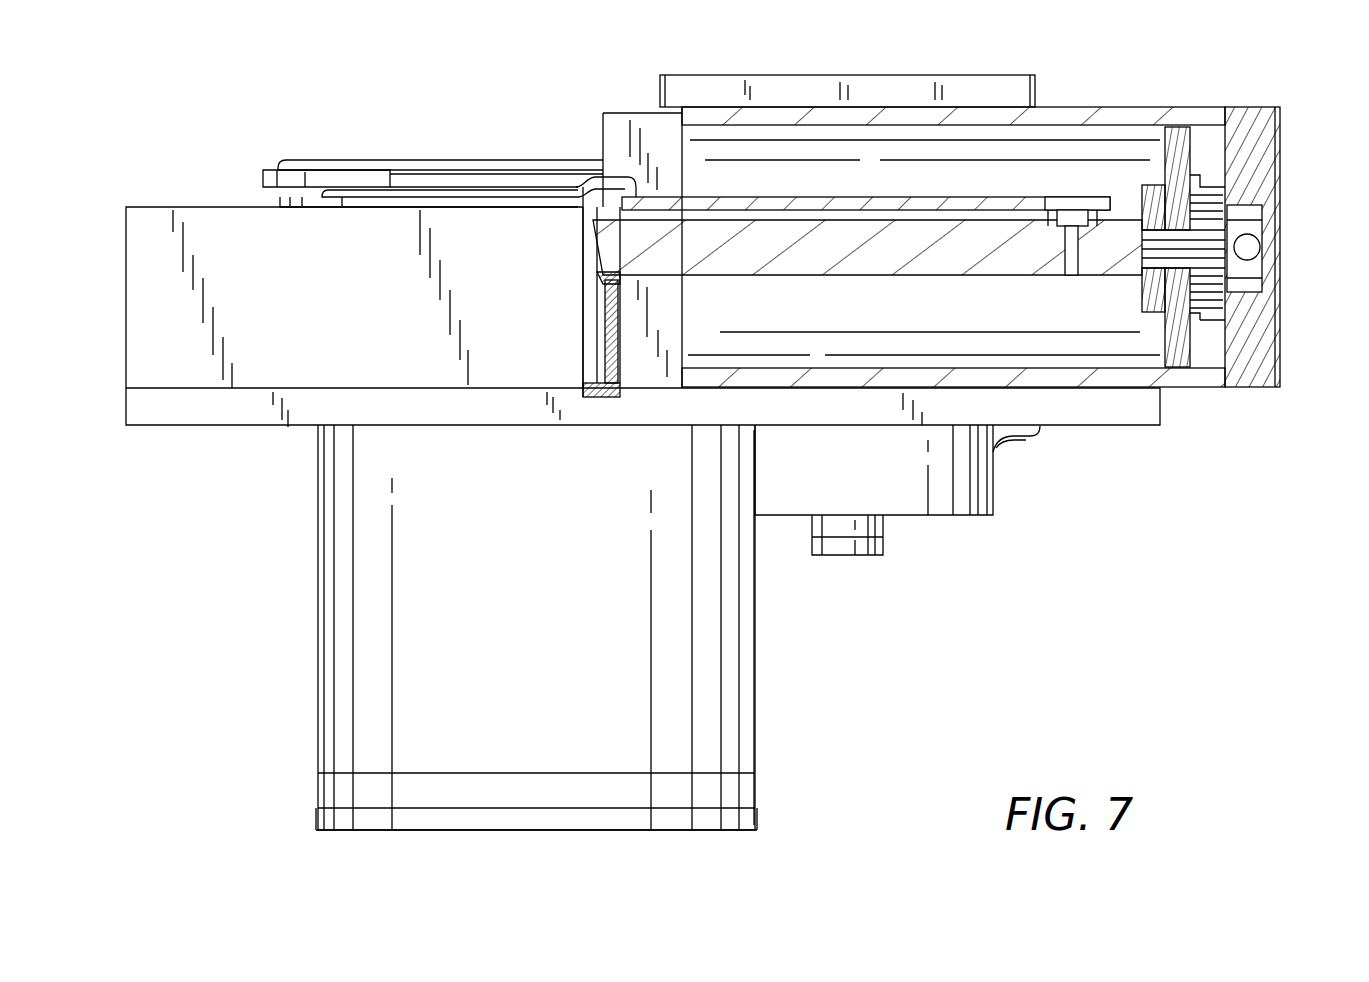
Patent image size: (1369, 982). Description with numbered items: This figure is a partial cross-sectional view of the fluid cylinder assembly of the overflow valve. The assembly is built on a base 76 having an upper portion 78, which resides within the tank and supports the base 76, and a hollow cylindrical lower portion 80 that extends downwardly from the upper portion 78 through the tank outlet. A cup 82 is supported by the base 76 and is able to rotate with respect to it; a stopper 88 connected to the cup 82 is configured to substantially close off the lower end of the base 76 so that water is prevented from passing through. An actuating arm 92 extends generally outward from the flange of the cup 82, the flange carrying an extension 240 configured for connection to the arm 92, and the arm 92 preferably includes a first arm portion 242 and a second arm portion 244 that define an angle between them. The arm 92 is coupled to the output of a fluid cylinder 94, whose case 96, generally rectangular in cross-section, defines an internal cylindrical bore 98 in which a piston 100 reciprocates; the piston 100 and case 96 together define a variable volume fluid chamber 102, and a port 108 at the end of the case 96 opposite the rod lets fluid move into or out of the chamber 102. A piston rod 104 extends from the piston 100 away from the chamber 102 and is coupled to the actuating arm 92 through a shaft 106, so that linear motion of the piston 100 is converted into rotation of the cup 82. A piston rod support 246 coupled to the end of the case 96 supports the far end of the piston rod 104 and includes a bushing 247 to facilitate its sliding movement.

The base 76 is at (770, 655).
The upper portion 78 is at (126, 272).
The lower portion 80 is at (318, 540).
The cup 82 is at (308, 183).
The stopper 88 is at (757, 832).
The actuating arm 92 is at (866, 196).
The fluid cylinder 94 is at (1056, 403).
The case 96 is at (862, 390).
The bore 98 is at (1062, 358).
The piston 100 is at (1170, 127).
The fluid chamber 102 is at (1200, 336).
The piston rod 104 is at (817, 282).
The shaft 106 is at (1070, 197).
The port 108 is at (1283, 208).
The extension 240 is at (482, 197).
The first arm portion 242 is at (797, 200).
The second arm portion 244 is at (550, 185).
The piston rod support 246 is at (610, 322).
The bushing 247 is at (600, 283).